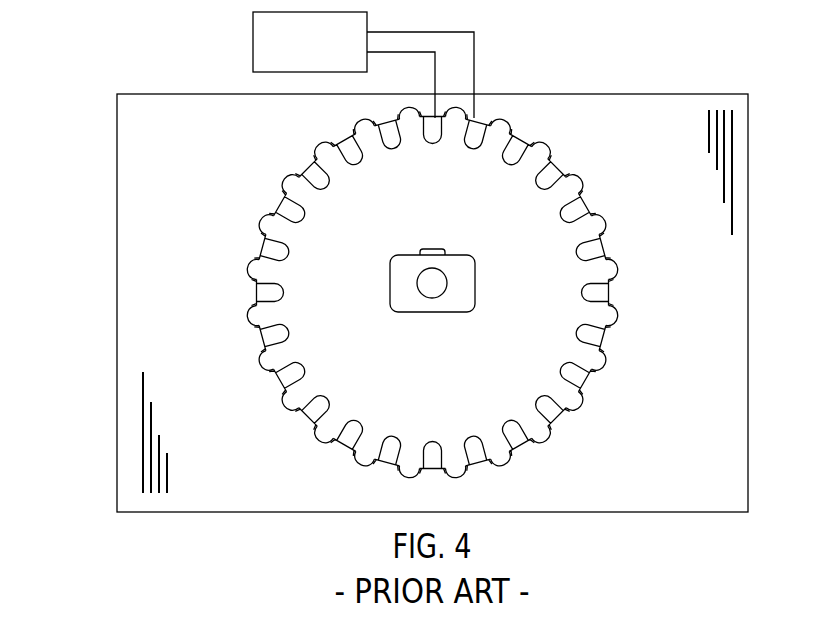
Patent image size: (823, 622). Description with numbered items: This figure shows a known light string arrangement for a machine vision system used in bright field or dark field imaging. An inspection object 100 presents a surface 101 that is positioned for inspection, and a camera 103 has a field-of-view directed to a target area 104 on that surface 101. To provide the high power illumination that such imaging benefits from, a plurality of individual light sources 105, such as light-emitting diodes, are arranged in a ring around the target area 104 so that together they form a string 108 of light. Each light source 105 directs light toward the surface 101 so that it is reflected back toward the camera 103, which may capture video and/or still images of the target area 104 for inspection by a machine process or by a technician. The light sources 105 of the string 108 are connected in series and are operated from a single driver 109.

The inspection object 100 is at (117, 204).
The surface 101 is at (185, 138).
The camera 103 is at (390, 270).
The target area 104 is at (461, 240).
The light source 105 is at (327, 186).
The string of light 108 is at (604, 403).
The driver 109 is at (253, 33).